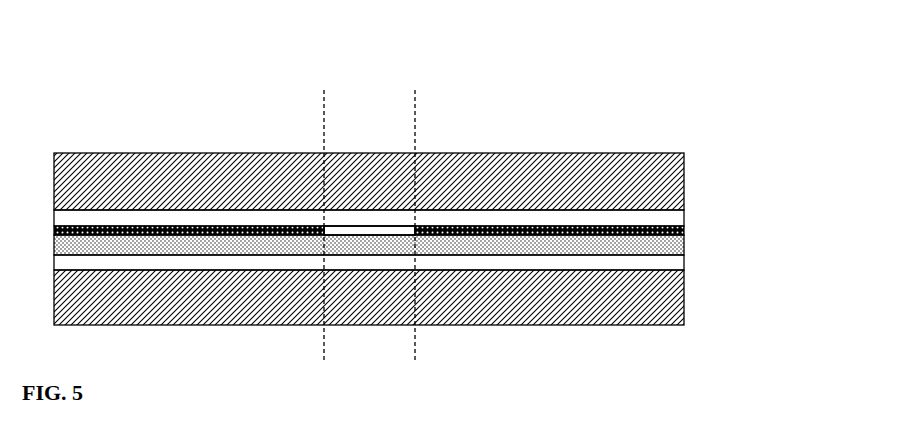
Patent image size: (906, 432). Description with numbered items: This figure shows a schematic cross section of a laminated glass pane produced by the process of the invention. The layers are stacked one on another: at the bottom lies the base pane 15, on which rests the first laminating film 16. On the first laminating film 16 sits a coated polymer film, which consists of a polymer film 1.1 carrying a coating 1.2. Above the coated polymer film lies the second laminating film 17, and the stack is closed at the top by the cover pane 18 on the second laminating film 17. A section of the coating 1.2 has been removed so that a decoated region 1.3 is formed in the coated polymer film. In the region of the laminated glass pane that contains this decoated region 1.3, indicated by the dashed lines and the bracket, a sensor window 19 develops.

The base pane 15 is at (668, 307).
The first laminating film 16 is at (672, 262).
The second laminating film 17 is at (670, 218).
The cover pane 18 is at (667, 179).
The sensor window 19 is at (415, 72).
The polymer film 1.1 is at (673, 244).
The coating 1.2 is at (684, 231).
The decoated region 1.3 is at (392, 230).